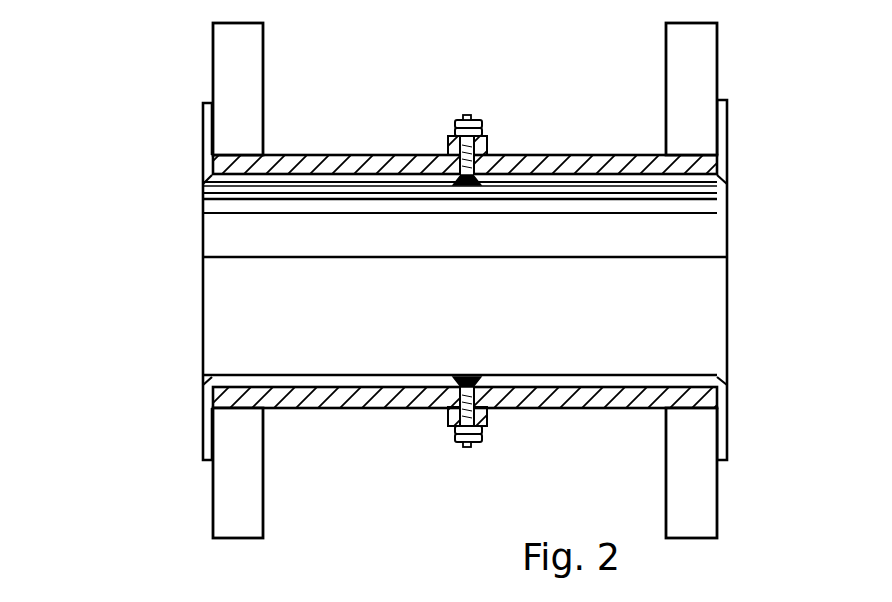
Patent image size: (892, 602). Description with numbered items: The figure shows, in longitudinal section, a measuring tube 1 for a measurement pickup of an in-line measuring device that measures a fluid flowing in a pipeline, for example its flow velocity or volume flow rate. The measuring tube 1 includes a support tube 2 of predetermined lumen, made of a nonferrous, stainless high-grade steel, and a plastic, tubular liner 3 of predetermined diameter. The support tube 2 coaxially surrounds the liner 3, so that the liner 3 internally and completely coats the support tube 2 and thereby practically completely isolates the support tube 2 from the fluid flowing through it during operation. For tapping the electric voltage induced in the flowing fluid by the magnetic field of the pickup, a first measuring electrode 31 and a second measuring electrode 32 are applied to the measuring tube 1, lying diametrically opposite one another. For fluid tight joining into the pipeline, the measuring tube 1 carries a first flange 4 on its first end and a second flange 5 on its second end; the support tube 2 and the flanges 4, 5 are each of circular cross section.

The measuring tube 1 is at (162, 471).
The support tube 2 is at (366, 163).
The liner 3 is at (263, 177).
The first flange 4 is at (230, 62).
The second flange 5 is at (685, 58).
The first measuring electrode 31 is at (466, 114).
The second measuring electrode 32 is at (468, 450).